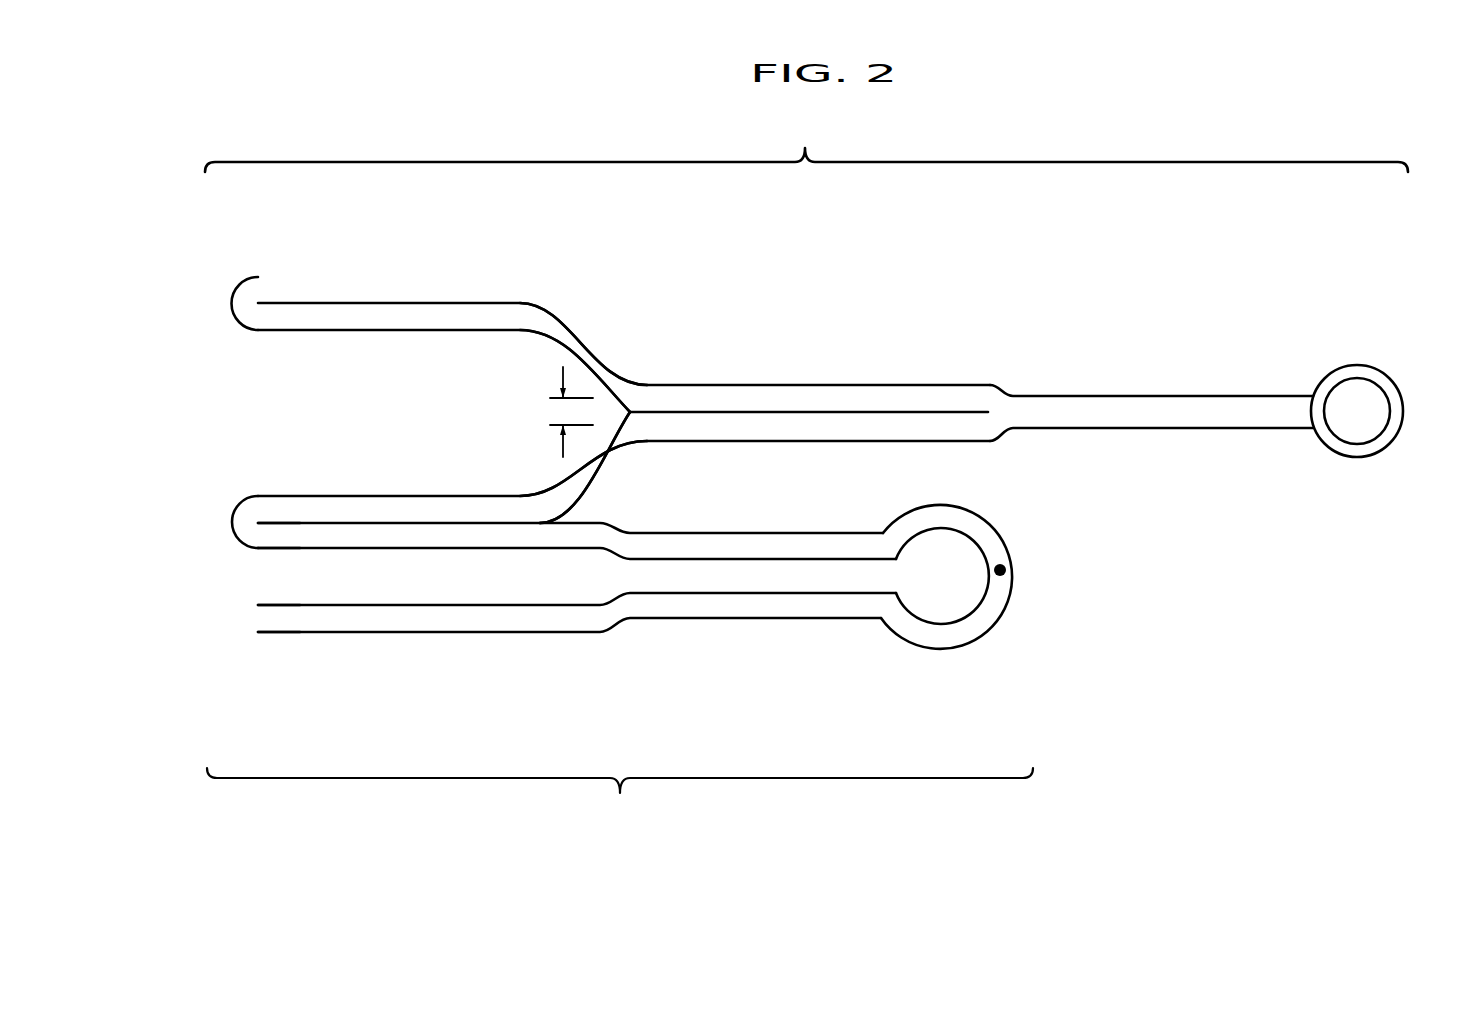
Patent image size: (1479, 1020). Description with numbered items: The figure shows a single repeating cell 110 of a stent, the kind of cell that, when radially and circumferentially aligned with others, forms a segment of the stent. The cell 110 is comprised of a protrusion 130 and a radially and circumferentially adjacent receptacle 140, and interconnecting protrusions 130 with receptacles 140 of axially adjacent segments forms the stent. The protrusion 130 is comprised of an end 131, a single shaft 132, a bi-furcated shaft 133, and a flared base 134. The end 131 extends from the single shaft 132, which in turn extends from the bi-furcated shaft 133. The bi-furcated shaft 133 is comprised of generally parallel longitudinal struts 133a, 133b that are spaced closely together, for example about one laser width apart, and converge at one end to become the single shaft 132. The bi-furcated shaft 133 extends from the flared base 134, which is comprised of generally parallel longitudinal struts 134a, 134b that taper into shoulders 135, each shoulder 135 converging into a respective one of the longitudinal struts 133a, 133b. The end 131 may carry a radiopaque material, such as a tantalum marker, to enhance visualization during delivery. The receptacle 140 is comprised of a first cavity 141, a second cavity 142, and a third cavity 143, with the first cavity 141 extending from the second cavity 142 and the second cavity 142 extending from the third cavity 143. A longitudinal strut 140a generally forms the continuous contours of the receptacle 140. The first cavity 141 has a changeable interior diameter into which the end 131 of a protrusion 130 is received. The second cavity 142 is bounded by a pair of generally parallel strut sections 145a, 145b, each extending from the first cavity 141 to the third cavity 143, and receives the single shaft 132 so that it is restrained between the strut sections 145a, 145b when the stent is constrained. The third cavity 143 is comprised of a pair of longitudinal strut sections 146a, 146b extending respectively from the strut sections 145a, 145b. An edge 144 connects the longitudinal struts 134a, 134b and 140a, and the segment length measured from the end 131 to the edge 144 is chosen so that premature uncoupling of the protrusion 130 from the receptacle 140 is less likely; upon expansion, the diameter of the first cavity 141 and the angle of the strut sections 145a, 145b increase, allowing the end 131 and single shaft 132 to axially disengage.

The cell 110 is at (1335, 523).
The protrusion 130 is at (775, 366).
The end 131 is at (1372, 352).
The single shaft 132 is at (1145, 383).
The bi-furcated shaft 133 is at (810, 343).
The longitudinal strut 133a is at (821, 395).
The longitudinal strut 133b is at (917, 425).
The flared base 134 is at (445, 413).
The longitudinal strut 134a is at (327, 313).
The longitudinal strut 134b is at (387, 503).
The shoulder 135 is at (580, 338).
The receptacle 140 is at (661, 638).
The longitudinal strut 140a is at (1000, 570).
The first cavity 141 is at (942, 576).
The second cavity 142 is at (753, 575).
The third cavity 143 is at (478, 572).
The edge 144 is at (233, 293).
The strut section 145a is at (778, 543).
The strut section 145b is at (697, 607).
The longitudinal strut section 146a is at (305, 532).
The longitudinal strut section 146b is at (387, 620).